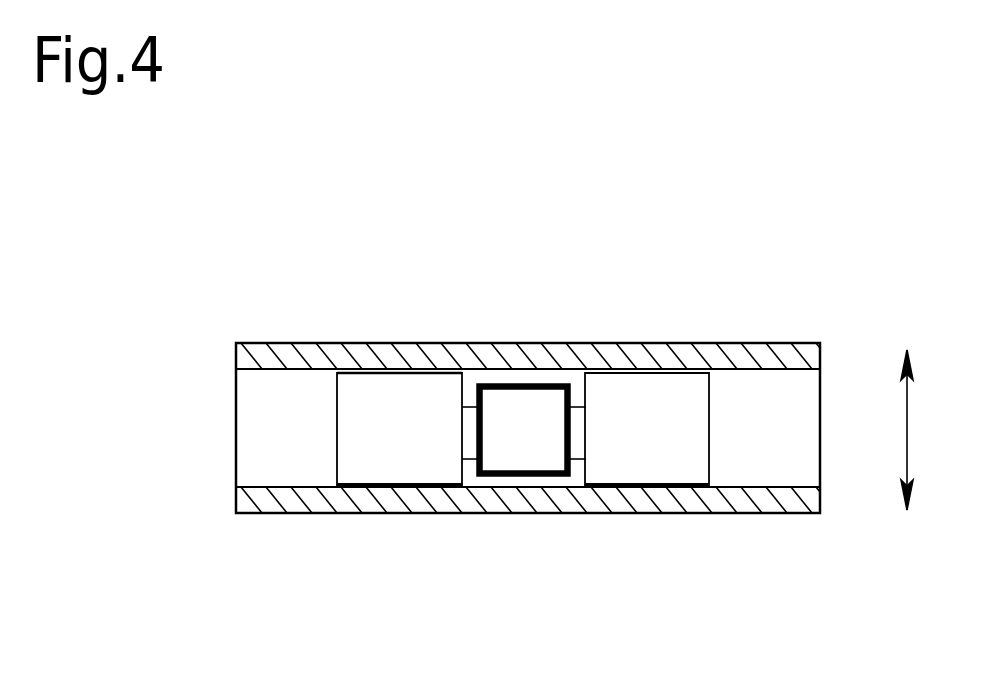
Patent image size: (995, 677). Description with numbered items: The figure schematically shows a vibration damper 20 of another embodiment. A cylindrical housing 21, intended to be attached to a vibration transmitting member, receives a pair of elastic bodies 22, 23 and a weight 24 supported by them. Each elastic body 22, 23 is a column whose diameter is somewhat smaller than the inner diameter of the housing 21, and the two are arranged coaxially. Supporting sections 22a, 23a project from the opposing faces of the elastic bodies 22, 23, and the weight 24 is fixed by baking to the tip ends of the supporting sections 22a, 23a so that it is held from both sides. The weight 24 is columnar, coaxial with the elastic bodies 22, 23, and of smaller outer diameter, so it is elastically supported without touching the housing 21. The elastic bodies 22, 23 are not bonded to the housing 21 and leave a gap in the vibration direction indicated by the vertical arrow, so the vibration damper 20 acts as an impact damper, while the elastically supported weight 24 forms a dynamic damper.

The vibration damper 20 is at (513, 293).
The cylindrical housing 21 is at (540, 342).
The elastic body 22 is at (372, 460).
The supporting section 22a is at (467, 462).
The elastic body 23 is at (678, 453).
The supporting section 23a is at (578, 462).
The weight 24 is at (521, 477).